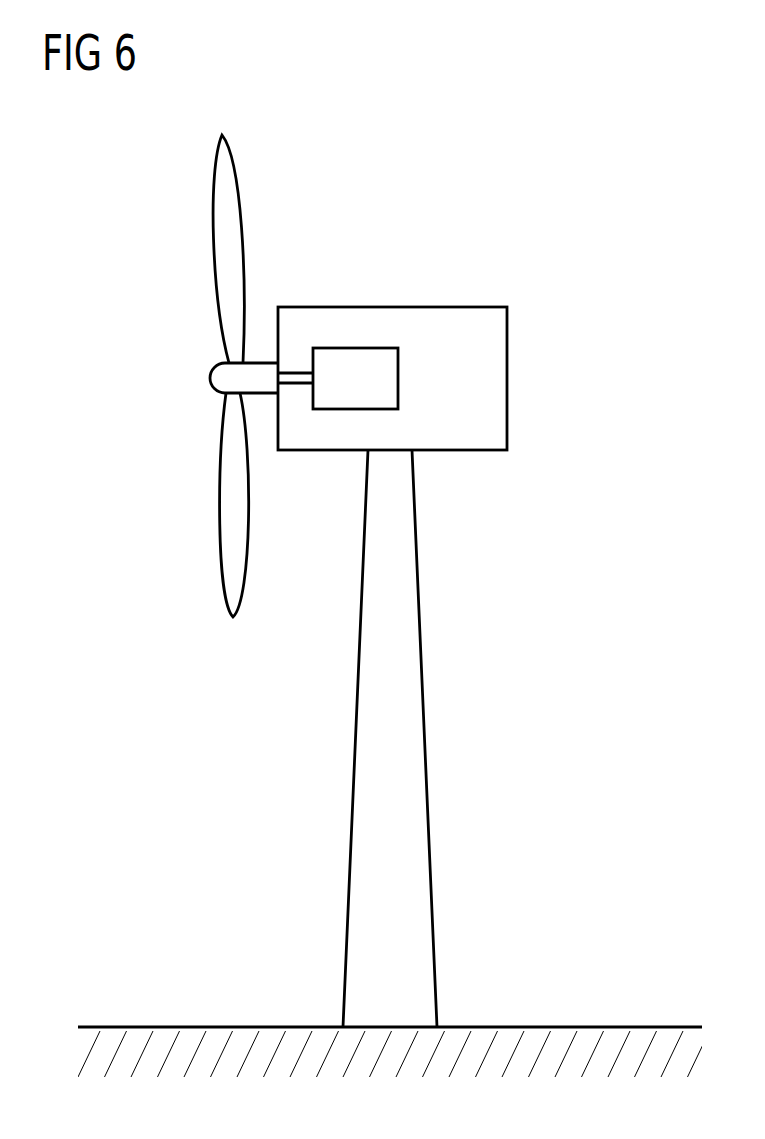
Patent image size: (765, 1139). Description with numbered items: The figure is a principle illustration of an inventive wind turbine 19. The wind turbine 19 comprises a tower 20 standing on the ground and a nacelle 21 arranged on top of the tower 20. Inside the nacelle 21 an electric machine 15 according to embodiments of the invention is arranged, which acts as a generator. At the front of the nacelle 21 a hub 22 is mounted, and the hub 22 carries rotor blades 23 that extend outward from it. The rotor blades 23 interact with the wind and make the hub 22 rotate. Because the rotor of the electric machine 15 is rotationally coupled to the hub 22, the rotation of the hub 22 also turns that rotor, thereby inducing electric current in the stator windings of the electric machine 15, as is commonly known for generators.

The wind turbine 19 is at (502, 192).
The tower 20 is at (422, 655).
The nacelle 21 is at (449, 307).
The hub 22 is at (256, 360).
The rotor blades 23 is at (215, 236).
The electric machine 15 is at (358, 357).